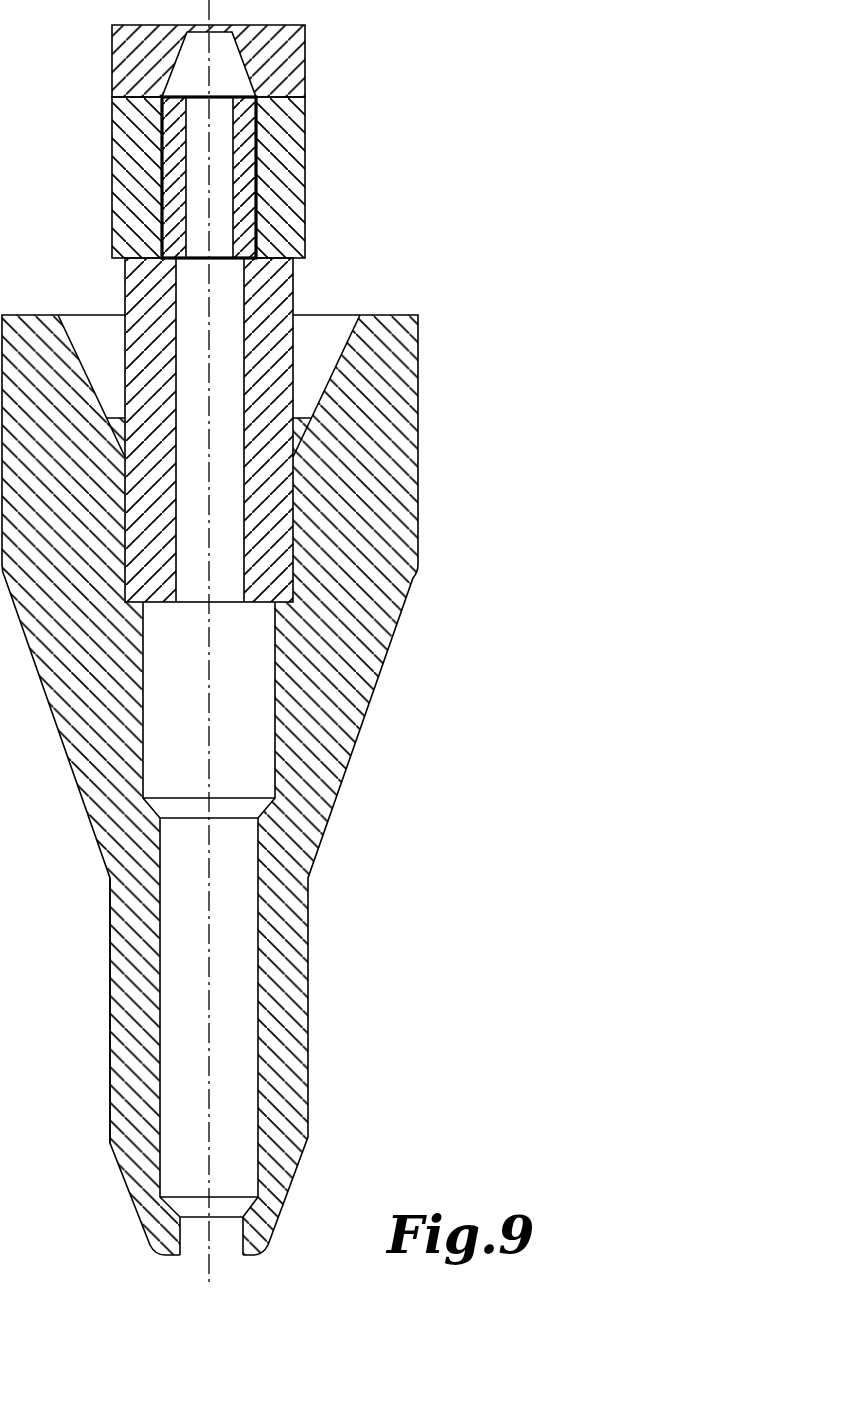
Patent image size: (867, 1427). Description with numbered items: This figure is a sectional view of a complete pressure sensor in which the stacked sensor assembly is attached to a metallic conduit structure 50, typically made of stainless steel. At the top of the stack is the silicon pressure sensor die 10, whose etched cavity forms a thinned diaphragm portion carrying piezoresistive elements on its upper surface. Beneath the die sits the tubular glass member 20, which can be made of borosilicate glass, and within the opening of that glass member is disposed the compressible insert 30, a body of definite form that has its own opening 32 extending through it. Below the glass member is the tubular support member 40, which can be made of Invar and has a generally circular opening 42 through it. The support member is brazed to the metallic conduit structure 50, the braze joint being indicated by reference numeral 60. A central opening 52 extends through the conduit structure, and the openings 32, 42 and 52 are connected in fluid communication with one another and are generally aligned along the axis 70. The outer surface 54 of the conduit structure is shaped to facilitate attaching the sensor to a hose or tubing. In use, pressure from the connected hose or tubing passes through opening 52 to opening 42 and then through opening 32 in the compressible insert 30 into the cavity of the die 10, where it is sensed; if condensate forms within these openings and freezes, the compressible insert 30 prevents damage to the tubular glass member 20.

The silicon diaphragm 10 is at (292, 55).
The tubular glass member 20 is at (297, 182).
The compressible insert 30 is at (168, 122).
The opening 32 is at (198, 197).
The tubular support member 40 is at (283, 293).
The opening 42 is at (185, 305).
The metallic conduit structure 50 is at (403, 553).
The opening 52 is at (245, 1105).
The outer surface 54 is at (110, 1040).
The braze 60 is at (302, 423).
The axis 70 is at (210, 968).